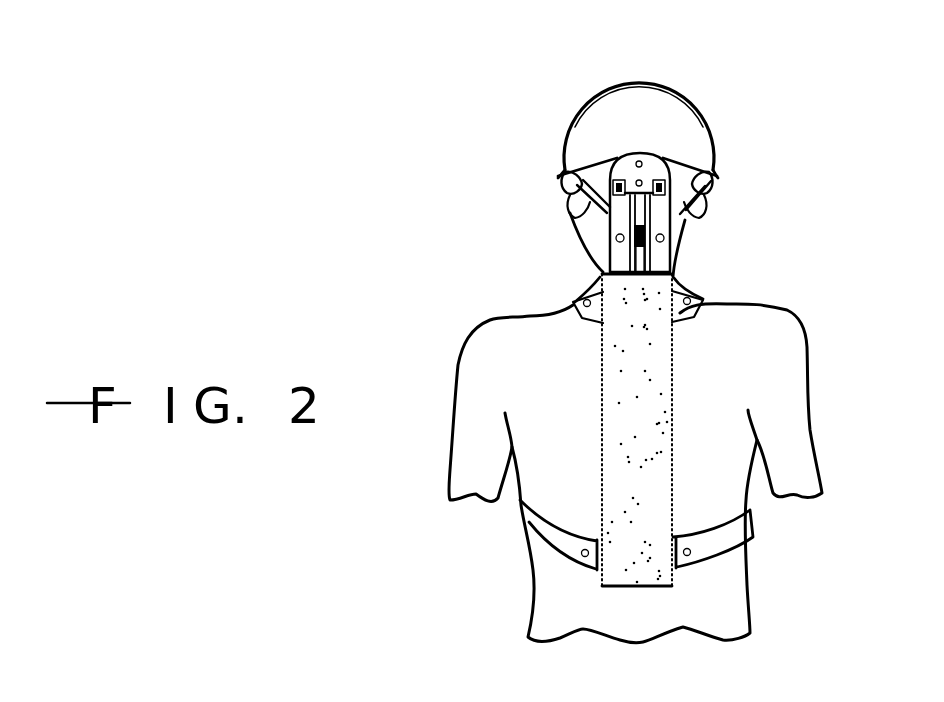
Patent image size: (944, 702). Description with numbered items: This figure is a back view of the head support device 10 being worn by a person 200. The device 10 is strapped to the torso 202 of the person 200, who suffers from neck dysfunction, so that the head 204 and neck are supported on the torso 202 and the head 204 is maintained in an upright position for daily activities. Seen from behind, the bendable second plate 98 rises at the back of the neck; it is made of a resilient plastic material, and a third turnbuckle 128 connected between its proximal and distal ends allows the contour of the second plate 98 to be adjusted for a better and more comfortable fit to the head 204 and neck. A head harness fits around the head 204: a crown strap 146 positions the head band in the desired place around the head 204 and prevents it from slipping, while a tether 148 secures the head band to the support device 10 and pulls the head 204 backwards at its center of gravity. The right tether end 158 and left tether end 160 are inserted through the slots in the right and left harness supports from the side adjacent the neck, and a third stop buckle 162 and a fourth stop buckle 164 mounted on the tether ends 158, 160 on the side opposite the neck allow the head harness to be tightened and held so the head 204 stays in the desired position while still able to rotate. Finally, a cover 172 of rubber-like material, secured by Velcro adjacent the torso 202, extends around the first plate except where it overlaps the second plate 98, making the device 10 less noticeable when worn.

The head support device 10 is at (562, 291).
The second plate 98 is at (693, 240).
The third turnbuckle 128 is at (590, 228).
The crown strap 146 is at (609, 82).
The tether 148 is at (714, 175).
The right tether end 158 is at (572, 214).
The left tether end 160 is at (717, 202).
The third stop buckle 162 is at (563, 172).
The fourth stop buckle 164 is at (714, 180).
The cover 172 is at (658, 382).
The person 200 is at (466, 335).
The torso 202 is at (525, 392).
The head 204 is at (667, 113).